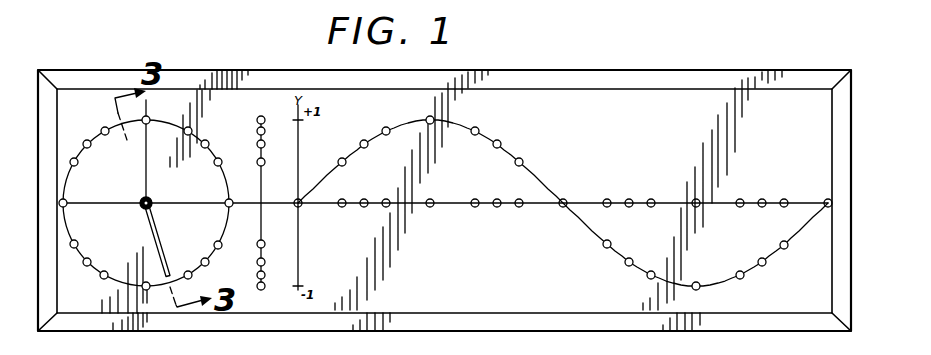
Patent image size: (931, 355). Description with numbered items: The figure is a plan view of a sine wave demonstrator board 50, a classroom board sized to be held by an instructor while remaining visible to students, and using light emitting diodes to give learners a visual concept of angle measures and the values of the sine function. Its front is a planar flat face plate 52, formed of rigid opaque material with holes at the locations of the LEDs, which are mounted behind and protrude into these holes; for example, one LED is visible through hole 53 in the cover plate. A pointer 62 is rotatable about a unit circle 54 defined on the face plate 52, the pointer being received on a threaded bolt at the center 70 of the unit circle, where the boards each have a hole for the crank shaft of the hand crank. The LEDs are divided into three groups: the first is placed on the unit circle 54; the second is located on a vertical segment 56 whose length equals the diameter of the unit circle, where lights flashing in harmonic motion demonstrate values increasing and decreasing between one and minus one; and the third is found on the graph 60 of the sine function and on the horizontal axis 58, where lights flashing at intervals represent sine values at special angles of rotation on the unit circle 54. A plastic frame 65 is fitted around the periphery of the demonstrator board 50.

The sine wave demonstrator board 50 is at (508, 67).
The face plate 52 is at (80, 108).
The hole 53 is at (226, 201).
The unit circle 54 is at (100, 273).
The vertical segment 56 is at (260, 189).
The horizontal axis 58 is at (452, 206).
The graph 60 is at (503, 147).
The pointer 62 is at (166, 253).
The plastic frame 65 is at (184, 332).
The center of the unit circle 70 is at (142, 199).